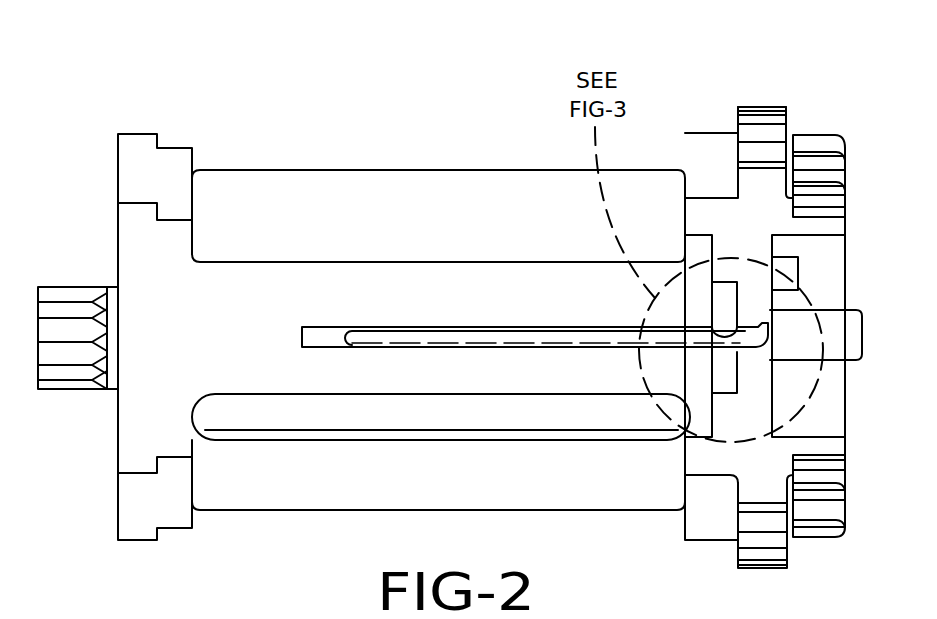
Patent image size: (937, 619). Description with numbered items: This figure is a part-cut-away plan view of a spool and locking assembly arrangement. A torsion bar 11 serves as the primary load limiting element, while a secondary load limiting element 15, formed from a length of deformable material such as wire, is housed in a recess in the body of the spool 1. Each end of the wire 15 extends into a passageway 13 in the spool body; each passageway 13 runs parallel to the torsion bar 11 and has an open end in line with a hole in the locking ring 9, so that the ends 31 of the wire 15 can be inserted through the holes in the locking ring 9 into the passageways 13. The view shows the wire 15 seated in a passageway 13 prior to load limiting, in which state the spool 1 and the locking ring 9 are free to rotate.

The spool 1 is at (360, 192).
The locking ring 9 is at (767, 107).
The torsion bar 11 is at (850, 340).
The passageway 13 is at (318, 335).
The wire end 31 is at (343, 338).
The secondary load limiting element 15 is at (533, 337).